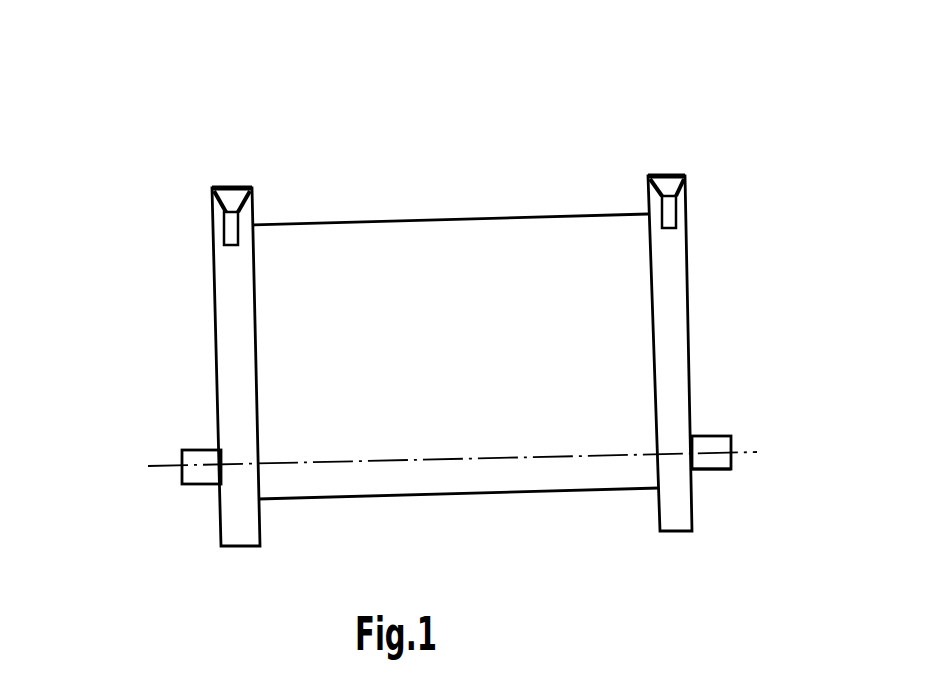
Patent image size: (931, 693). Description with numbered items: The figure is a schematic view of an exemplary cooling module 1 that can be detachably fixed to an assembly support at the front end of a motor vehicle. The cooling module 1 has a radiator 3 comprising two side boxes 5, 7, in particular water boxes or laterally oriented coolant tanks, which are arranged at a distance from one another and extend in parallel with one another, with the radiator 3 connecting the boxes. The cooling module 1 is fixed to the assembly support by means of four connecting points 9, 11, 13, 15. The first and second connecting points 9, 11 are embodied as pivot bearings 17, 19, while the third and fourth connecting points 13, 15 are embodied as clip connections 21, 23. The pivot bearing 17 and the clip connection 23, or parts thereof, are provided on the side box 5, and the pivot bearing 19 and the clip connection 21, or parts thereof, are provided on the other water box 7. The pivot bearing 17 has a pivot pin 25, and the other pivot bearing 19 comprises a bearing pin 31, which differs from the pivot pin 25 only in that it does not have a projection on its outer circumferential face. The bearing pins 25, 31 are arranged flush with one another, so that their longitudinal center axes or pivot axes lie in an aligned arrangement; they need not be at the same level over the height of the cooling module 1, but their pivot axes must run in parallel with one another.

The cooling module 1 is at (430, 158).
The radiator 3 is at (550, 196).
The side box 5 is at (668, 272).
The side box 7 is at (232, 297).
The first connecting point 9 is at (724, 484).
The second connecting point 11 is at (191, 494).
The third connecting point 13 is at (213, 188).
The fourth connecting point 15 is at (675, 178).
The pivot bearing 17 is at (712, 421).
The pivot bearing 19 is at (181, 438).
The clip connection 21 is at (252, 188).
The clip connection 23 is at (657, 178).
The pivot pin 25 is at (720, 435).
The bearing pin 31 is at (185, 462).